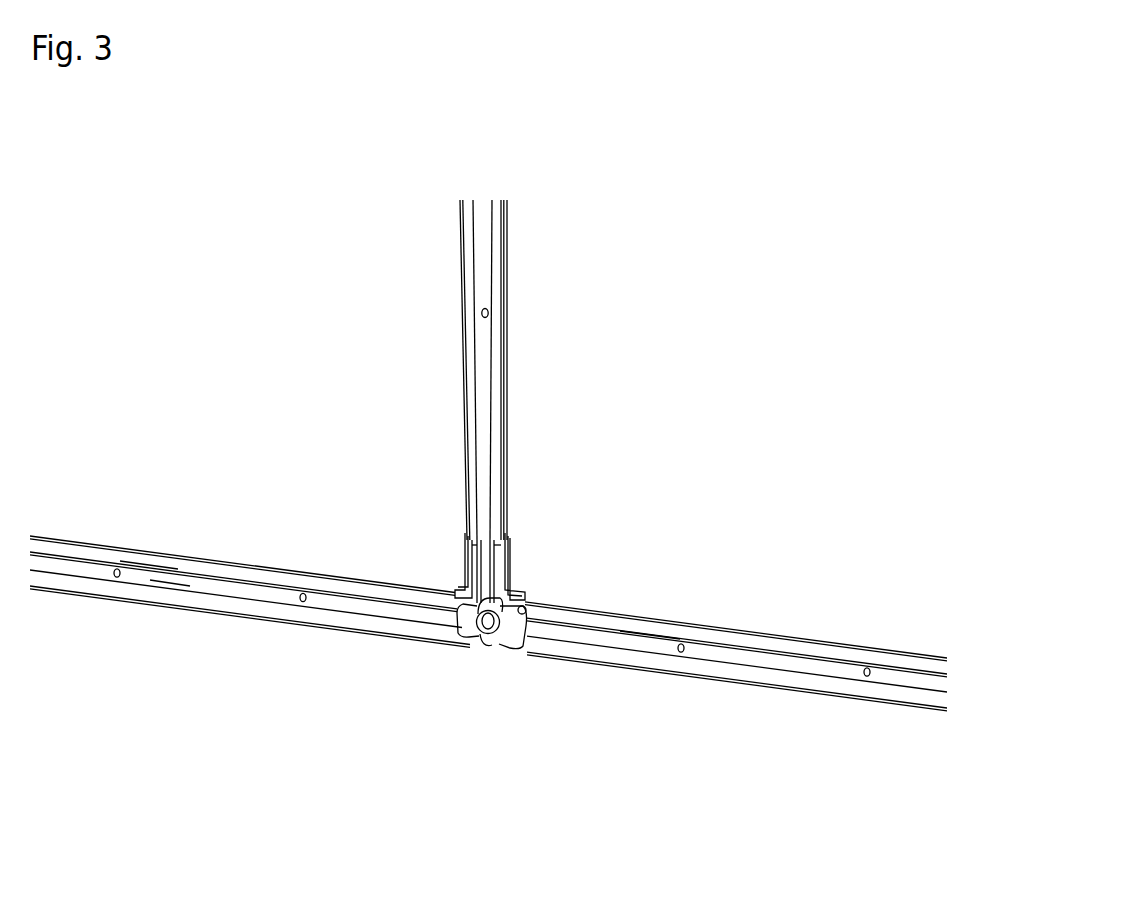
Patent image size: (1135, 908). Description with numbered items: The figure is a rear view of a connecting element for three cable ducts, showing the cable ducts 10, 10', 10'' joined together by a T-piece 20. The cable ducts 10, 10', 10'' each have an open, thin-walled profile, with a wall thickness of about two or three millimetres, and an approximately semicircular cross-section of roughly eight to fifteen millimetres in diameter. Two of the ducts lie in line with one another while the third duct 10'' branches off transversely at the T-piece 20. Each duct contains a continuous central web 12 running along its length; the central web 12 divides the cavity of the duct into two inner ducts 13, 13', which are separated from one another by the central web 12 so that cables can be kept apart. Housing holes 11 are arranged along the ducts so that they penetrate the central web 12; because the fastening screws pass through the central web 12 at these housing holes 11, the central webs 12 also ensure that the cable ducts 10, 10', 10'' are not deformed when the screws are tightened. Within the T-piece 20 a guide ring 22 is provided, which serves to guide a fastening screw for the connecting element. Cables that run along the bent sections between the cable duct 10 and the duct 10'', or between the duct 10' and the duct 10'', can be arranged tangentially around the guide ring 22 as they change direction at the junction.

The cable duct 10 is at (250, 518).
The cable duct 10' is at (736, 550).
The cable duct 10'' is at (661, 370).
The housing hole 11 is at (868, 668).
The central web 12 is at (622, 635).
The inner duct 13 is at (145, 484).
The inner duct 13' is at (185, 682).
The T-piece 20 is at (455, 575).
The guide ring 22 is at (490, 635).